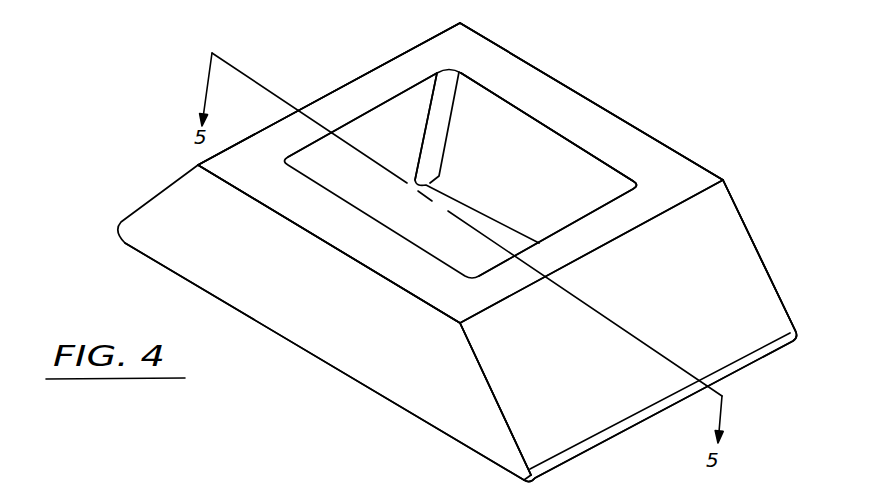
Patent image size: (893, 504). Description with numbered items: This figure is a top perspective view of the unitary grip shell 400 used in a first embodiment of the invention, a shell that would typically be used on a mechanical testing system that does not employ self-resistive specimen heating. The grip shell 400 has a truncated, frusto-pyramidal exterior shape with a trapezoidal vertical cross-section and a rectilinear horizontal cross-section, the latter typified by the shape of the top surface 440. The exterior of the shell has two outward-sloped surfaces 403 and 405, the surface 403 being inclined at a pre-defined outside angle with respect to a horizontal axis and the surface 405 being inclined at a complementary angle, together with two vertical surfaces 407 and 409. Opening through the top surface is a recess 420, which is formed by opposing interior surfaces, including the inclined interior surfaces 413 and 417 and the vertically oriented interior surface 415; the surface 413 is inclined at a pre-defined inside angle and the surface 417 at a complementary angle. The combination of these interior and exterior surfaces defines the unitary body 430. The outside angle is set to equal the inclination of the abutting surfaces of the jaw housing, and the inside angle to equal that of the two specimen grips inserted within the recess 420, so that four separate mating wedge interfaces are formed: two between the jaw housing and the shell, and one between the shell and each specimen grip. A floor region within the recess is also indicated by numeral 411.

The unitary grip shell 400 is at (328, 390).
The outward-sloped surface 403 is at (329, 88).
The outward-sloped surface 405 is at (698, 287).
The vertical surface 407 is at (318, 316).
The vertical surface 409 is at (620, 119).
The recess floor 411 is at (391, 228).
The interior surface 413 is at (402, 145).
The interior surface 415 is at (535, 179).
The interior surface 417 is at (580, 216).
The recess 420 is at (473, 146).
The unitary body 430 is at (266, 173).
The top surface 440 is at (686, 178).